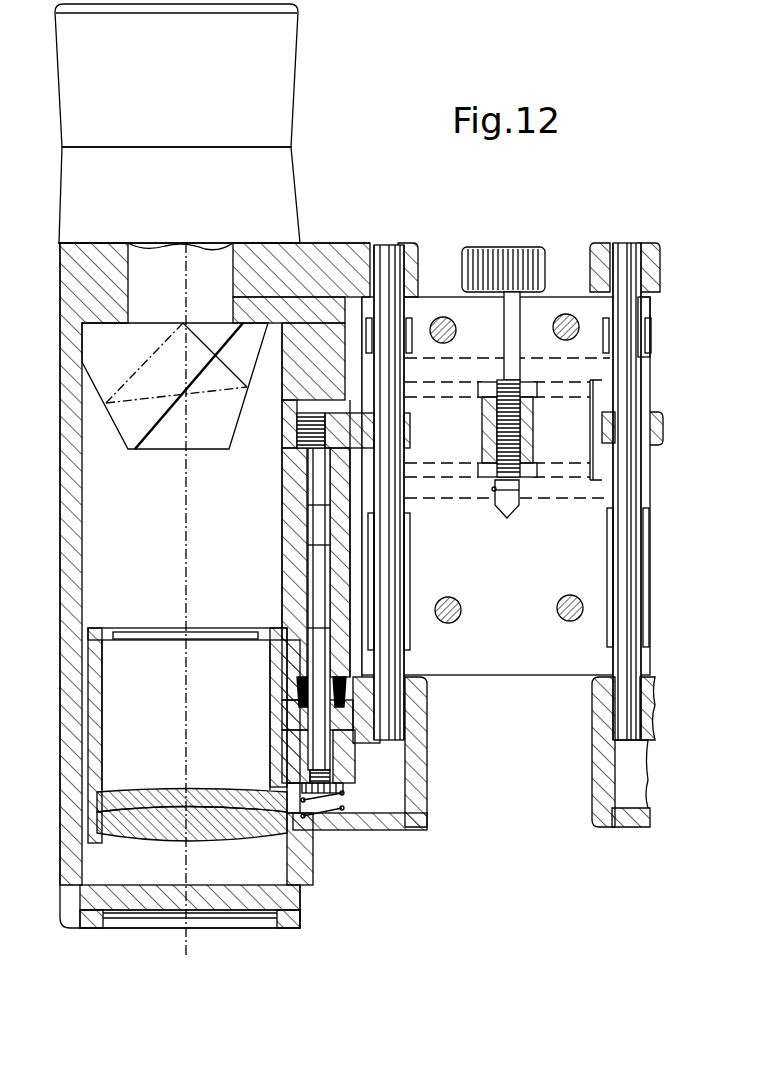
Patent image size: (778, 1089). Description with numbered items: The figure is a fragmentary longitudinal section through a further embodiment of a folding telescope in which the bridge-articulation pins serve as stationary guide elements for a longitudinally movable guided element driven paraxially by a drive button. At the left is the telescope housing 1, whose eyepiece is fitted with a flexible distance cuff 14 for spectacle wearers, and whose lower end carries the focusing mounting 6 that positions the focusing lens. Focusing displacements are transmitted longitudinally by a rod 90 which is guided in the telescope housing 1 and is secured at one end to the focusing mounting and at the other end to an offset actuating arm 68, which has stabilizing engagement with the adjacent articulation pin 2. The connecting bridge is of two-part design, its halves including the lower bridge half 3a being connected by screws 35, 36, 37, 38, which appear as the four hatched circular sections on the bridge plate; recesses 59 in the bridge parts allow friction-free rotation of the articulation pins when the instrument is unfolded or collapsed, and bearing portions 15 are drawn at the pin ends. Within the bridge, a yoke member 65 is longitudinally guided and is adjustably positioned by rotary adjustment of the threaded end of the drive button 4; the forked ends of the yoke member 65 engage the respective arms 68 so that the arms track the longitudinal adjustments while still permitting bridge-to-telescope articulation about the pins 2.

The telescope housing 1 is at (62, 590).
The articulation pin 2 is at (388, 743).
The lower bridge half 3a is at (530, 657).
The drive button 4 is at (520, 247).
The focusing mounting 6 is at (352, 763).
The flexible distance cuff 14 is at (280, 92).
The bearing block 15 is at (342, 247).
The screw 35 is at (572, 621).
The screw 36 is at (452, 623).
The screw 37 is at (567, 314).
The screw 38 is at (441, 317).
The recess 59 is at (630, 326).
The yoke member 65 is at (412, 454).
The offset actuating arm 68 is at (297, 432).
The rod 90 is at (312, 548).